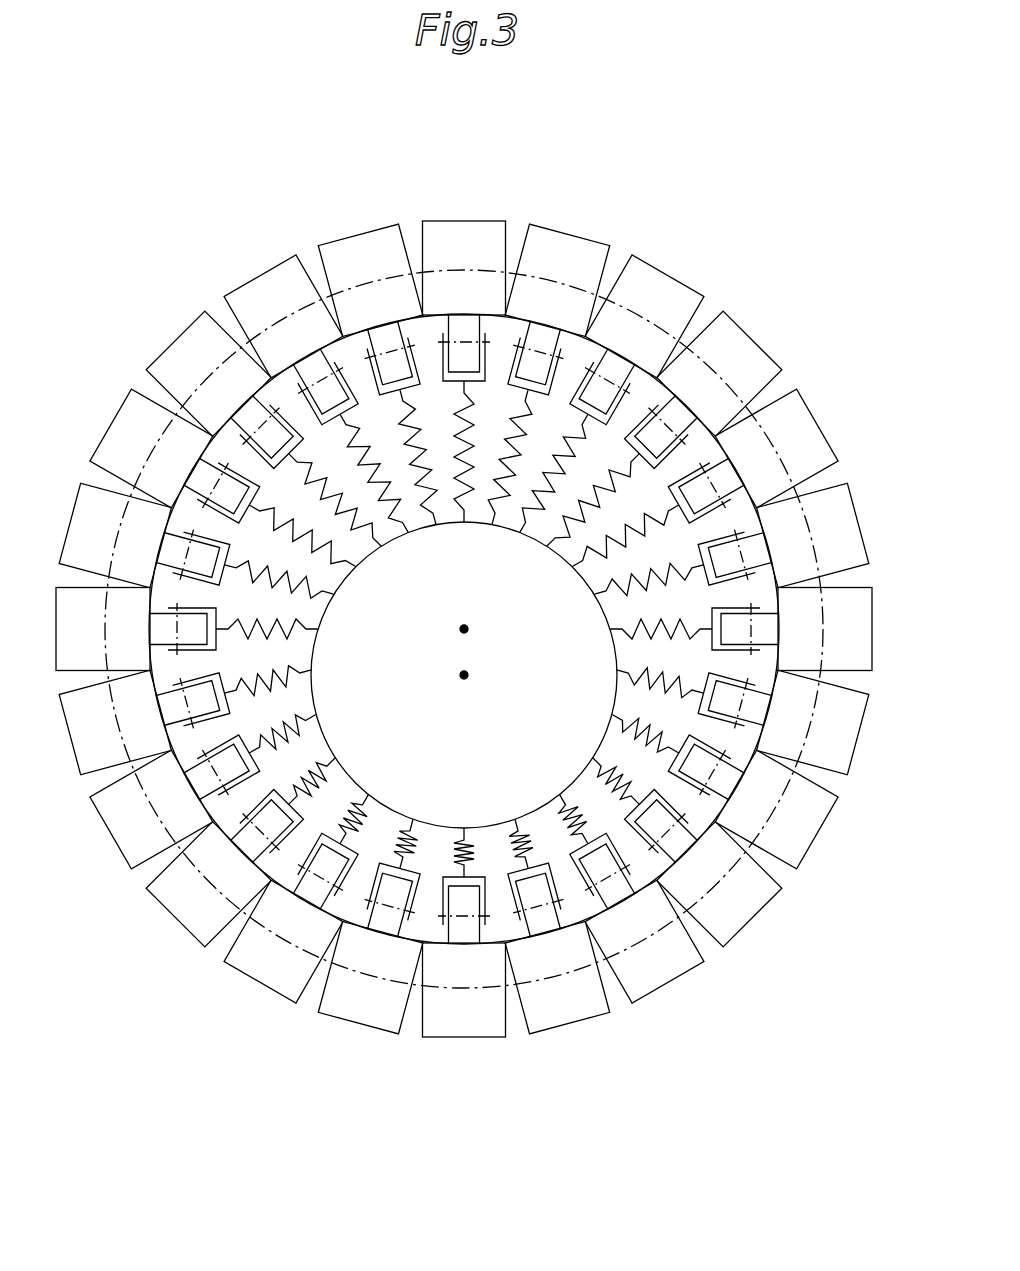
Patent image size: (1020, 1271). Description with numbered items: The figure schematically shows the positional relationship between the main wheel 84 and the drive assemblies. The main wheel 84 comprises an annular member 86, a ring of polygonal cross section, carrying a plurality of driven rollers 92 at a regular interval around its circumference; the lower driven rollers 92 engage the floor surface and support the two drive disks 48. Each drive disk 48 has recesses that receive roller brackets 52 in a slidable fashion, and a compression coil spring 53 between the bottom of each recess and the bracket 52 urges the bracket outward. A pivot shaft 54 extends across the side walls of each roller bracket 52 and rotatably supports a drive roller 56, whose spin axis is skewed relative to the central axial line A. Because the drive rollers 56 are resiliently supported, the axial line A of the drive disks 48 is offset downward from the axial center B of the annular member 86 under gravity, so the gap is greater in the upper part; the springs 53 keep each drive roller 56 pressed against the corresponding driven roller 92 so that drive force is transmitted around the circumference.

The drive disk 48 is at (444, 798).
The roller bracket 52 is at (532, 915).
The compression coil spring 53 is at (303, 789).
The pivot shaft 54 is at (617, 880).
The drive roller 56 is at (387, 921).
The main wheel 84 is at (176, 324).
The annular member 86 is at (234, 360).
The driven roller 92 is at (347, 254).